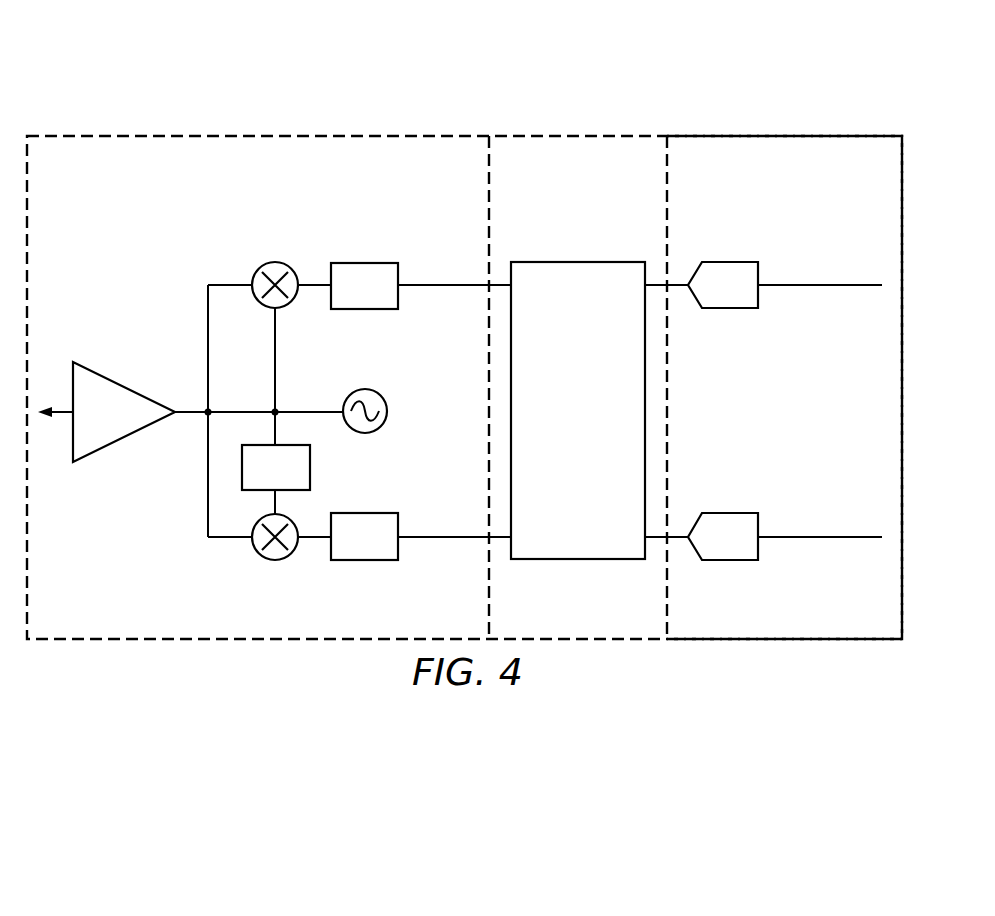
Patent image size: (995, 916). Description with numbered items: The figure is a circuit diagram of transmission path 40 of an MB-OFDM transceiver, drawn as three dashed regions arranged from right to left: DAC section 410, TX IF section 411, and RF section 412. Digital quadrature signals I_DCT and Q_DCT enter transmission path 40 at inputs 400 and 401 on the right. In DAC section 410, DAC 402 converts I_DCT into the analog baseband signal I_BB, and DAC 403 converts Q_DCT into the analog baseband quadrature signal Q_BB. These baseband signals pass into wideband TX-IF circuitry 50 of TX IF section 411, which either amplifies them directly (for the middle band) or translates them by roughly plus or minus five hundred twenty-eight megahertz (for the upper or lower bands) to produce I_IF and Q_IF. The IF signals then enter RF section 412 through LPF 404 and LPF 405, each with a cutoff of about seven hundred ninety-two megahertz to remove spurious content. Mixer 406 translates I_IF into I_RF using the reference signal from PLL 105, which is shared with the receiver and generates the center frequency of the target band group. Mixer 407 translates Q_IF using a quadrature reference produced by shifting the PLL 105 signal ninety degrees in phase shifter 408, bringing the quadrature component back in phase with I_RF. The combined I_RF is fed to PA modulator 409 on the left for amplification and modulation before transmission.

The transmission path 40 is at (240, 60).
The RF section 412 is at (198, 130).
The transmission (TX) IF section 411 is at (603, 130).
The digital-to-analog conversion (DAC) section 410 is at (816, 130).
The PA modulator 409 is at (125, 385).
The mixer 406 is at (272, 262).
The LPF 404 is at (362, 263).
The mixer 407 is at (275, 561).
The LPF 405 is at (365, 561).
The phase shifter 408 is at (310, 466).
The PLL 105 is at (387, 411).
The wideband TX-IF circuitry 50 is at (592, 472).
The DAC 402 is at (735, 262).
The DAC 403 is at (735, 561).
The input 400 is at (846, 251).
The input 401 is at (846, 503).